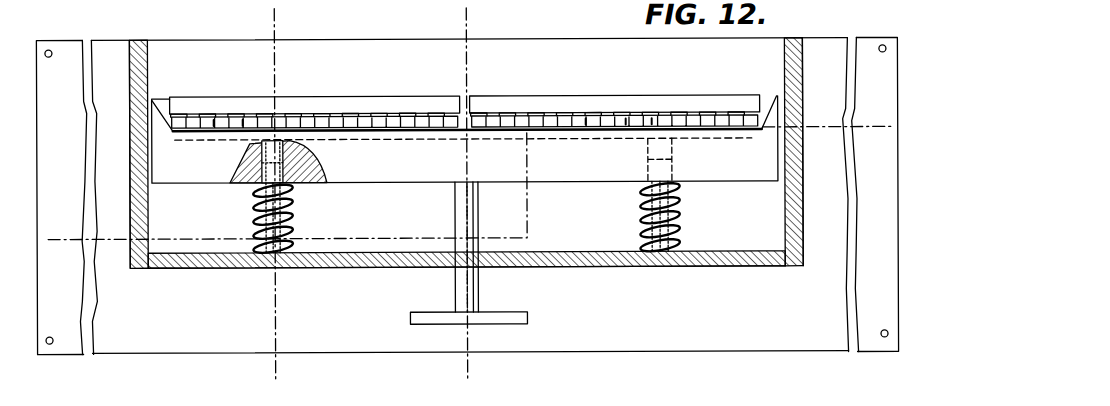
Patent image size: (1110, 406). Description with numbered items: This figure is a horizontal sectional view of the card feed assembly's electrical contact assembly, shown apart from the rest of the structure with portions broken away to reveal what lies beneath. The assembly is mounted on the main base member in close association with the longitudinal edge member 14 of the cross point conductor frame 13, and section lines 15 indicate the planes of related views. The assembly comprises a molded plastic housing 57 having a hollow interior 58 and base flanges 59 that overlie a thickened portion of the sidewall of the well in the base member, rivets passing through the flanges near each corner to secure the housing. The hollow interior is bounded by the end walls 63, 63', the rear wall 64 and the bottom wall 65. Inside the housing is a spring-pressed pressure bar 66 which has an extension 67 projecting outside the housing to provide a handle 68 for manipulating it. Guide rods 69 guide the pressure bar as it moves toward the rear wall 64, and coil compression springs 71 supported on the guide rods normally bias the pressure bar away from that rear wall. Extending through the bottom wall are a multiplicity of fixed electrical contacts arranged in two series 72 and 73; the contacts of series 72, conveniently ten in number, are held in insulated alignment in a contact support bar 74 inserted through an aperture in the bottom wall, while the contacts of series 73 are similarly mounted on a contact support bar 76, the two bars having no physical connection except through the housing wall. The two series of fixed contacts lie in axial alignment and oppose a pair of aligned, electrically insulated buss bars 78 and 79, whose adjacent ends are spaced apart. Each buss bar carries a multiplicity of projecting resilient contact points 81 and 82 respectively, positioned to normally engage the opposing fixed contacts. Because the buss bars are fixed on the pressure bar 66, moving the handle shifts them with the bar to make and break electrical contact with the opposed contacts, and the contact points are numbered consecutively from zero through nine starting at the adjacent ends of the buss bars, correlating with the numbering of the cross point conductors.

The cross point conductor frame 13 is at (62, 220).
The longitudinal edge member 14 is at (290, 19).
The section line 15- 15 is at (483, 19).
The housing 57 is at (470, 174).
The hollow interior 58 is at (338, 243).
The base flanges 59 is at (122, 338).
The end wall 63 is at (114, 154).
The end wall 63' is at (823, 152).
The rear wall 64 is at (393, 268).
The bottom wall 65 is at (353, 81).
The pressure bar 66 is at (457, 168).
The extension 67 is at (479, 289).
The handle 68 is at (527, 317).
The guide rods 69 is at (265, 190).
The coil compression springs 71 is at (294, 208).
The series of fixed electrical contacts 72 is at (242, 113).
The series of fixed electrical contacts 73 is at (596, 113).
The contact support bar 74 is at (298, 106).
The contact support bar 76 is at (697, 96).
The buss bar 78 is at (378, 133).
The buss bar 79 is at (583, 130).
The resilient contact points 81 is at (247, 127).
The resilient contact points 82 is at (652, 128).